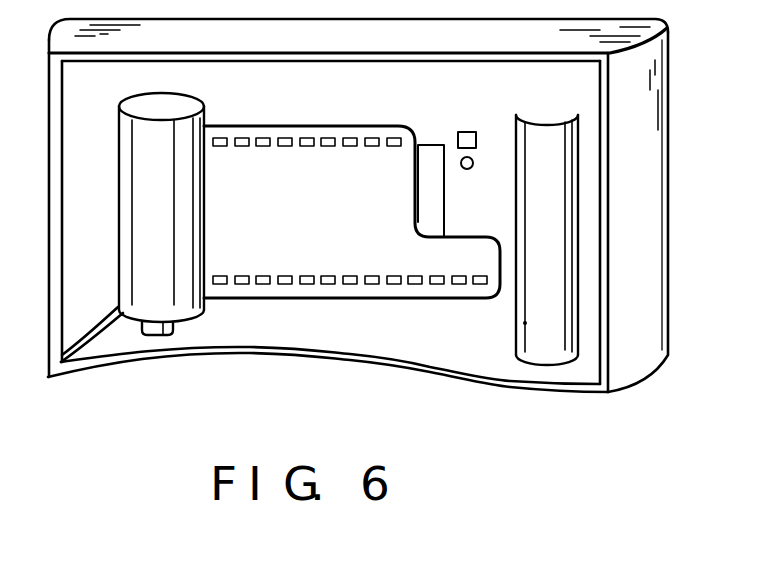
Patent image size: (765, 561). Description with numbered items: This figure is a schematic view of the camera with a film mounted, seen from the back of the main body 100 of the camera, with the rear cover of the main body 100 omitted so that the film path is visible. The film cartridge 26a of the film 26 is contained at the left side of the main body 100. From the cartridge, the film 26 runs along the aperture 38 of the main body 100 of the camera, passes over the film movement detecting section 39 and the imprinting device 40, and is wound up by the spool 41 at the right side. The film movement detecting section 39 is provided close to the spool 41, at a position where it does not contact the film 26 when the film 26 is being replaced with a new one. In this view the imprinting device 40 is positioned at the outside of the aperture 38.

The main body of the camera 100 is at (527, 393).
The film cartridge 26a is at (128, 247).
The film 26 is at (405, 300).
The aperture 38 is at (430, 143).
The film movement detecting section 39 is at (468, 130).
The imprinting device 40 is at (467, 170).
The spool 41 is at (552, 120).